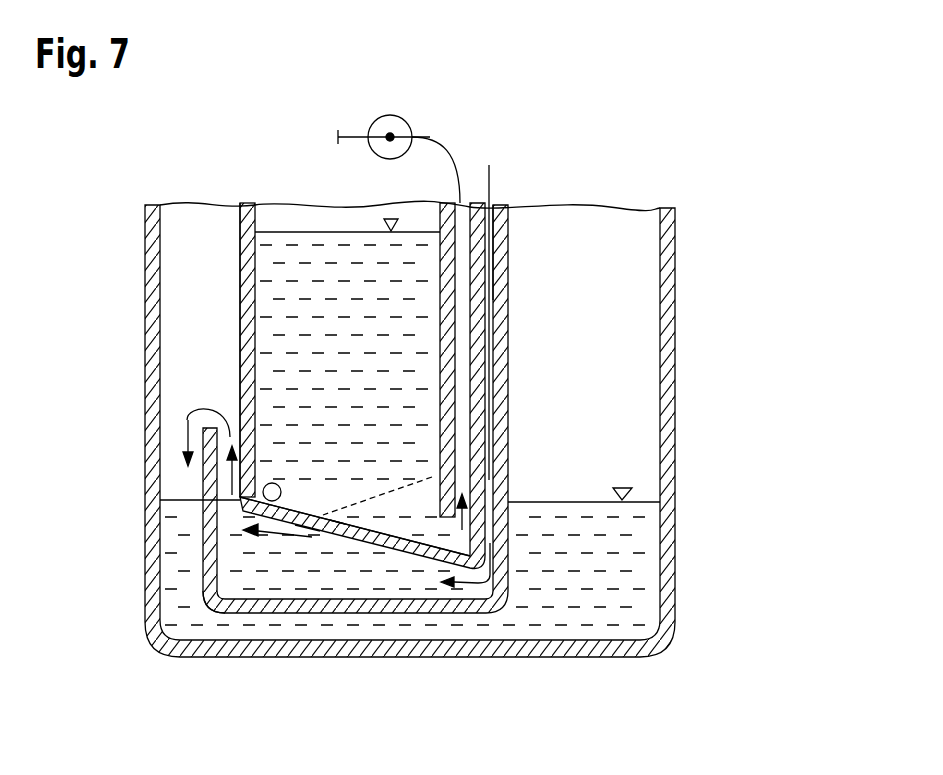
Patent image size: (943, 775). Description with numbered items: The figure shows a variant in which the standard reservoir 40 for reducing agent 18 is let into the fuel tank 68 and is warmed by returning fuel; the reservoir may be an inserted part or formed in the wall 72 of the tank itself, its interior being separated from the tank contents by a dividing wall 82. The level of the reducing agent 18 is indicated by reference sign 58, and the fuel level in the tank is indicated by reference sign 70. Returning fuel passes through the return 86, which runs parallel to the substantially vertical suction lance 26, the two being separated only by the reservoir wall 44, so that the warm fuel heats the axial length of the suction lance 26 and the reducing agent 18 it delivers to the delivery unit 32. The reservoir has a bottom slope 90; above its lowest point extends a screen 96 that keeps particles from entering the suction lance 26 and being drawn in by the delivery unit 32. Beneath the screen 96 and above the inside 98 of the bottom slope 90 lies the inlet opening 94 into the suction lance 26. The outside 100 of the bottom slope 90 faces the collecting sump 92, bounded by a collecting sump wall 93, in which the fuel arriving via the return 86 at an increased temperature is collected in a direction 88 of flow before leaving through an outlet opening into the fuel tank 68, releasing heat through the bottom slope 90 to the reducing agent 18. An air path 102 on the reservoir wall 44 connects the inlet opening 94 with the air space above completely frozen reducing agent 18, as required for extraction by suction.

The reducing agent 18 is at (288, 353).
The suction lance 26 is at (480, 283).
The delivery unit 32 is at (406, 126).
The standard reservoir 40 is at (241, 323).
The reservoir wall 44 is at (240, 330).
The level of reducing agent 58 is at (386, 218).
The fuel tank 68 is at (650, 182).
The fuel level 70 is at (634, 488).
The wall of the fuel tank 72 is at (675, 412).
The dividing wall 82 is at (252, 232).
The return 86 is at (493, 243).
The direction of flow 88 is at (187, 420).
The bottom slope 90 is at (388, 545).
The collecting sump 92 is at (236, 570).
The collecting sump wall 93 is at (217, 607).
The inlet opening 94 is at (485, 501).
The screen 96 is at (345, 505).
The inside of the bottom slope 98 is at (265, 497).
The outside of the bottom slope 100 is at (307, 533).
The air path 102 is at (510, 228).